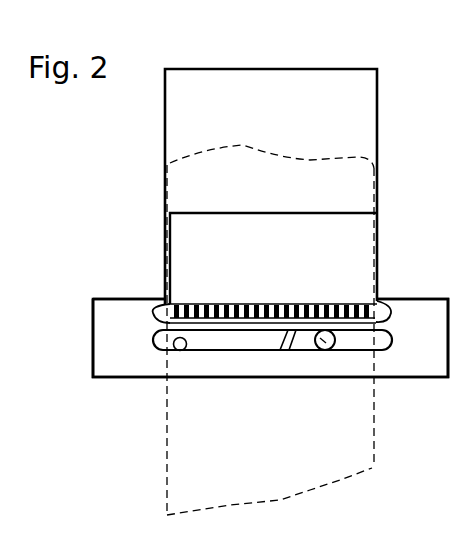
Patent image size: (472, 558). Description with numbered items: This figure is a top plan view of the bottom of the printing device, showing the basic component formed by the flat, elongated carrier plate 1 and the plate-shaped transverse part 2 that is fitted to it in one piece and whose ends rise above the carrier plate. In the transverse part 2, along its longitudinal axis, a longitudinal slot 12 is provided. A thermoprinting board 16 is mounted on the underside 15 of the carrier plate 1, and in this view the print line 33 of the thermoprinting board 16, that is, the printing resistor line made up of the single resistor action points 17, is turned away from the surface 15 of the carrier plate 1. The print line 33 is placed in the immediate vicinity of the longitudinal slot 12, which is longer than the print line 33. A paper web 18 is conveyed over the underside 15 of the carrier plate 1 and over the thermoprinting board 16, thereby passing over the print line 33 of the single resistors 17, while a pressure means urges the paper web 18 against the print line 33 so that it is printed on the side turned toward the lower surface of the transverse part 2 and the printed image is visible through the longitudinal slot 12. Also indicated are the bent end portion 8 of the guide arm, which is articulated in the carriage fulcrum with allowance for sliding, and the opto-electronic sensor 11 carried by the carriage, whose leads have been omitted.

The carrier plate 1 is at (223, 63).
The plate-shaped transverse part 2 is at (421, 313).
The bent end portion 8 is at (285, 345).
The opto-electronic sensor 11 is at (318, 350).
The longitudinal slot 12 is at (185, 350).
The underside of carrier plate 15 is at (365, 117).
The thermoprinting board 16 is at (249, 226).
The single resistor action points 17 is at (307, 304).
The paper web 18 is at (374, 437).
The print line 33 is at (216, 303).